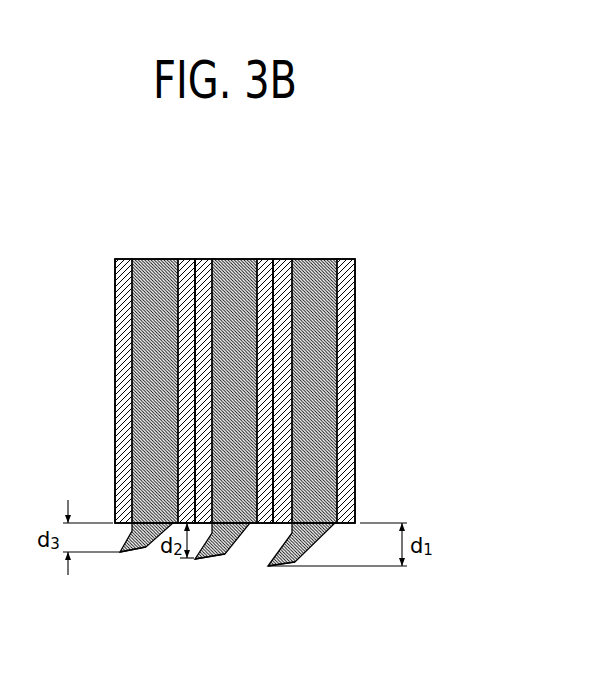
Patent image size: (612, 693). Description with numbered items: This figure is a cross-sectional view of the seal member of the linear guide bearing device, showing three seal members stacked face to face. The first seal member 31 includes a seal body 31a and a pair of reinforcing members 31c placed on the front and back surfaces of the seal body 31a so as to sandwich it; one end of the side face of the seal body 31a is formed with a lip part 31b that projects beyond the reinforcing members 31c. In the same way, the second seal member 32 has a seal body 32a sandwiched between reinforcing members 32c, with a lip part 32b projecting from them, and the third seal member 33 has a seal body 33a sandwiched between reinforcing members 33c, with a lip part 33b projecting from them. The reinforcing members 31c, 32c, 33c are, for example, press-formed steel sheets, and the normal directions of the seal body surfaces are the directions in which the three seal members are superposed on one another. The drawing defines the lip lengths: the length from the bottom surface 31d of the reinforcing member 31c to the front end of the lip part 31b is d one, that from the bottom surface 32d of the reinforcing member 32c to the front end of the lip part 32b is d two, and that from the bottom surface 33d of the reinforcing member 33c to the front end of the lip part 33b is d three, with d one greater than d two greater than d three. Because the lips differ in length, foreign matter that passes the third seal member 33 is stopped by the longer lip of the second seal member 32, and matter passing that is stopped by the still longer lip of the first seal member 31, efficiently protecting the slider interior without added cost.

The first seal member 31 is at (343, 247).
The seal body 31a is at (325, 258).
The lip part 31b is at (290, 565).
The reinforcing member 31c is at (285, 258).
The bottom surface 31d is at (347, 525).
The second seal member 32 is at (222, 246).
The seal body 32a is at (233, 258).
The lip part 32b is at (215, 559).
The reinforcing member 32c is at (203, 258).
The bottom surface 32d is at (265, 526).
The third seal member 33 is at (134, 248).
The seal body 33a is at (157, 258).
The lip part 33b is at (140, 550).
The reinforcing member 33c is at (183, 258).
The bottom surface 33d is at (120, 553).